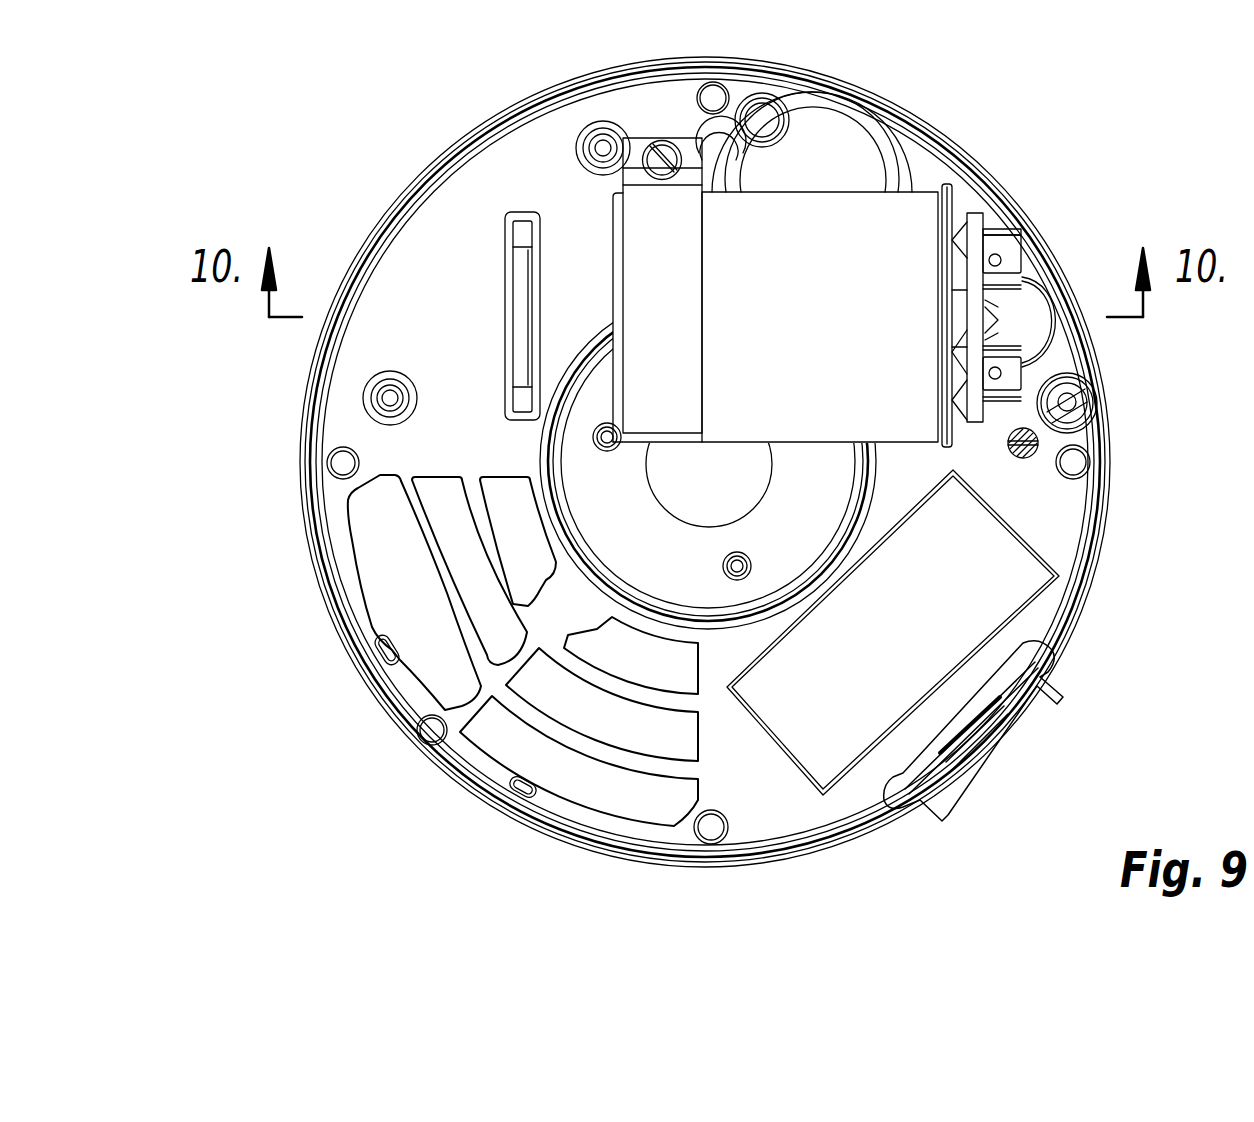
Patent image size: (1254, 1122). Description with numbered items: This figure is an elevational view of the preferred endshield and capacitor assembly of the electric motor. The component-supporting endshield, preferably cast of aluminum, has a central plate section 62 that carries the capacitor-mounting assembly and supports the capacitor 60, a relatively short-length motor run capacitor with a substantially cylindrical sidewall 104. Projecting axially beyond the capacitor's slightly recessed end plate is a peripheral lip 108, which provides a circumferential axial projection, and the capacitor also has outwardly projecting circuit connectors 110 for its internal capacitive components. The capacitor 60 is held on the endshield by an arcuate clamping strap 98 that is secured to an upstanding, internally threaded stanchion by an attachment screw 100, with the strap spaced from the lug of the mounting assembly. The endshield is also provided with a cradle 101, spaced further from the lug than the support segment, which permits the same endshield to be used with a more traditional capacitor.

The capacitor 60 is at (930, 165).
The central plate section 62 is at (823, 815).
The arcuate clamping strap 98 is at (677, 265).
The attachment screw 100 is at (660, 152).
The cradle 101 is at (520, 298).
The cylindrical sidewall 104 is at (880, 340).
The peripheral lip 108 is at (948, 447).
The circuit connectors 110 is at (1027, 250).